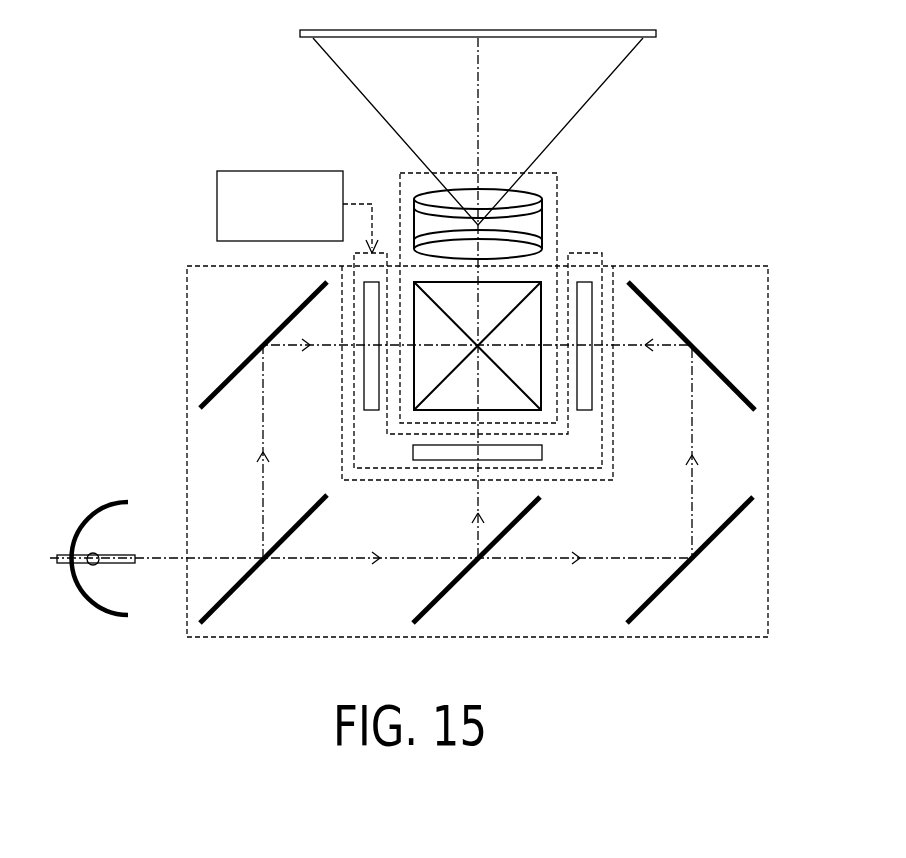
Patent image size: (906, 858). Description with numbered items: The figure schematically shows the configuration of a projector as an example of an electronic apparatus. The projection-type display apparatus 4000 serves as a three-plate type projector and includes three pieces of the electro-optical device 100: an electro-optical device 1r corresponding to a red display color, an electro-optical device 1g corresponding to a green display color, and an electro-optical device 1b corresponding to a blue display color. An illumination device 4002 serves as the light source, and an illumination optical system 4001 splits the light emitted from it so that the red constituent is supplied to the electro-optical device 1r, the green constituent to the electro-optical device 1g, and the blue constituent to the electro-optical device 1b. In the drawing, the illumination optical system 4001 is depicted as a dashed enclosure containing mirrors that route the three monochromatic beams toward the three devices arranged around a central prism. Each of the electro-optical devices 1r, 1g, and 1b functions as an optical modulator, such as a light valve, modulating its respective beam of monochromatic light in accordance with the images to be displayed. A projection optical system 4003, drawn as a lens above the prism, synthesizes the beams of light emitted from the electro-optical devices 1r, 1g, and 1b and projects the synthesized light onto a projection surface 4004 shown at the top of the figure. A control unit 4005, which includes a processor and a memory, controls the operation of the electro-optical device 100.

The projection-type display apparatus 4000 is at (188, 117).
The illumination optical system 4001 is at (734, 266).
The illumination device 4002 is at (108, 500).
The projection optical system 4003 is at (557, 213).
The projection surface 4004 is at (530, 40).
The control unit 4005 is at (217, 215).
The electro-optical device 1r is at (363, 393).
The electro-optical device 1g is at (420, 460).
The electro-optical device 1b is at (593, 387).
The electro-optical device 100 is at (477, 414).